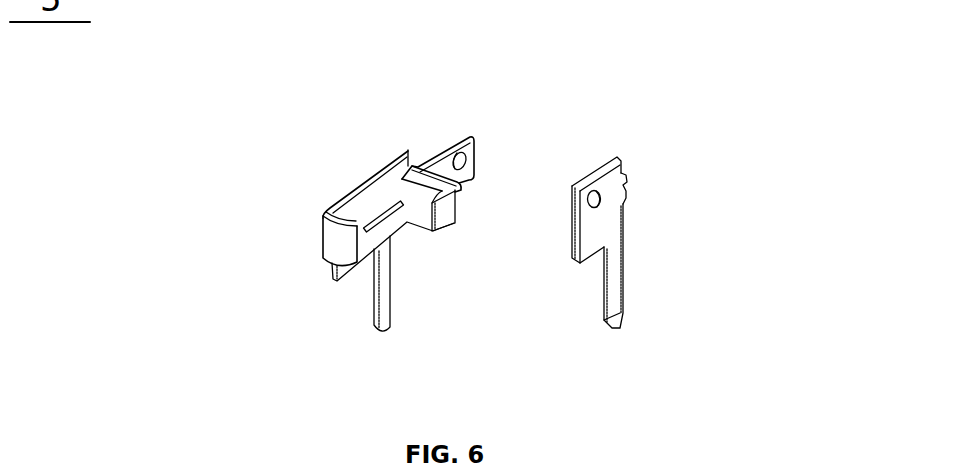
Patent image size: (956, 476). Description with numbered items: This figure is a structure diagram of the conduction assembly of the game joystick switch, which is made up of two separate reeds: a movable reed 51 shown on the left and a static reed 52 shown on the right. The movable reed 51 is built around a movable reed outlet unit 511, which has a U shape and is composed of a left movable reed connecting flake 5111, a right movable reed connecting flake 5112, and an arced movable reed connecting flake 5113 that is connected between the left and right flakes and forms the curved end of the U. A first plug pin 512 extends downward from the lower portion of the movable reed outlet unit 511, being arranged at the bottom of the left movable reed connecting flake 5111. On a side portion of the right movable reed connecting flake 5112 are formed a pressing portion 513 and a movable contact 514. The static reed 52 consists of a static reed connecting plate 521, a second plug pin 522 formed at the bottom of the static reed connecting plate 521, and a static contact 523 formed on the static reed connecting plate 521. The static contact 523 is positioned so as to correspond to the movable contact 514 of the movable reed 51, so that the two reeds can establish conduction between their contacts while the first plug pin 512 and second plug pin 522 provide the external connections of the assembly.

The movable reed 51 is at (283, 209).
The movable reed outlet unit 511 is at (331, 178).
The left movable reed connecting flake 5111 is at (353, 187).
The right movable reed connecting flake 5112 is at (448, 148).
The arced movable reed connecting flake 5113 is at (332, 232).
The first plug pin 512 is at (385, 297).
The pressing portion 513 is at (450, 222).
The movable contact 514 is at (466, 153).
The static reed 52 is at (650, 198).
The static reed connecting plate 521 is at (611, 186).
The second plug pin 522 is at (622, 278).
The static contact 523 is at (602, 202).